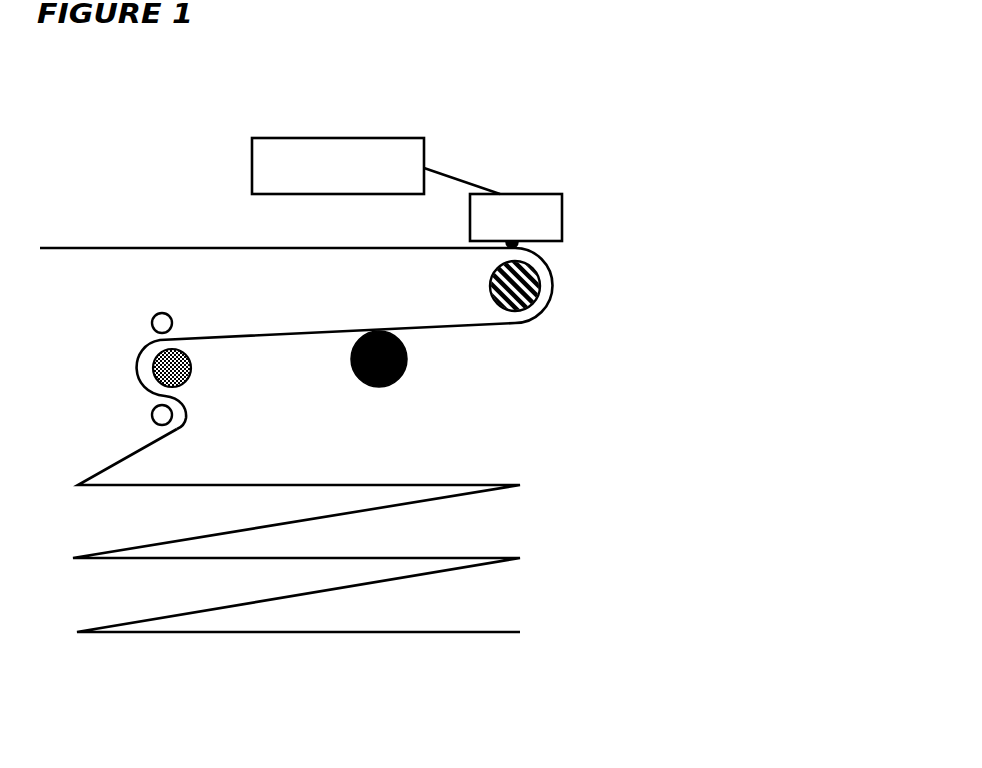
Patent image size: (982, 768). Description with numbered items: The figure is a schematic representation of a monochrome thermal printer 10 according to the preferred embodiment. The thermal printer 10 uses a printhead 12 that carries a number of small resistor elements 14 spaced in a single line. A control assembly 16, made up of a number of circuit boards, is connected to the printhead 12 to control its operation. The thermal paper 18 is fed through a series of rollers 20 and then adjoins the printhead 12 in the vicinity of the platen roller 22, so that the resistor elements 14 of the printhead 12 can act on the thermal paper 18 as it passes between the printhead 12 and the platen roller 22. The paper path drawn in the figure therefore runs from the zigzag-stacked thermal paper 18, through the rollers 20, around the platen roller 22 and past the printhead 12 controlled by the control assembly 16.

The thermal printer 10 is at (468, 92).
The printhead 12 is at (542, 212).
The resistor elements 14 is at (520, 247).
The control assembly 16 is at (323, 150).
The thermal paper 18 is at (115, 247).
The rollers 20 is at (190, 370).
The platen roller 22 is at (537, 282).